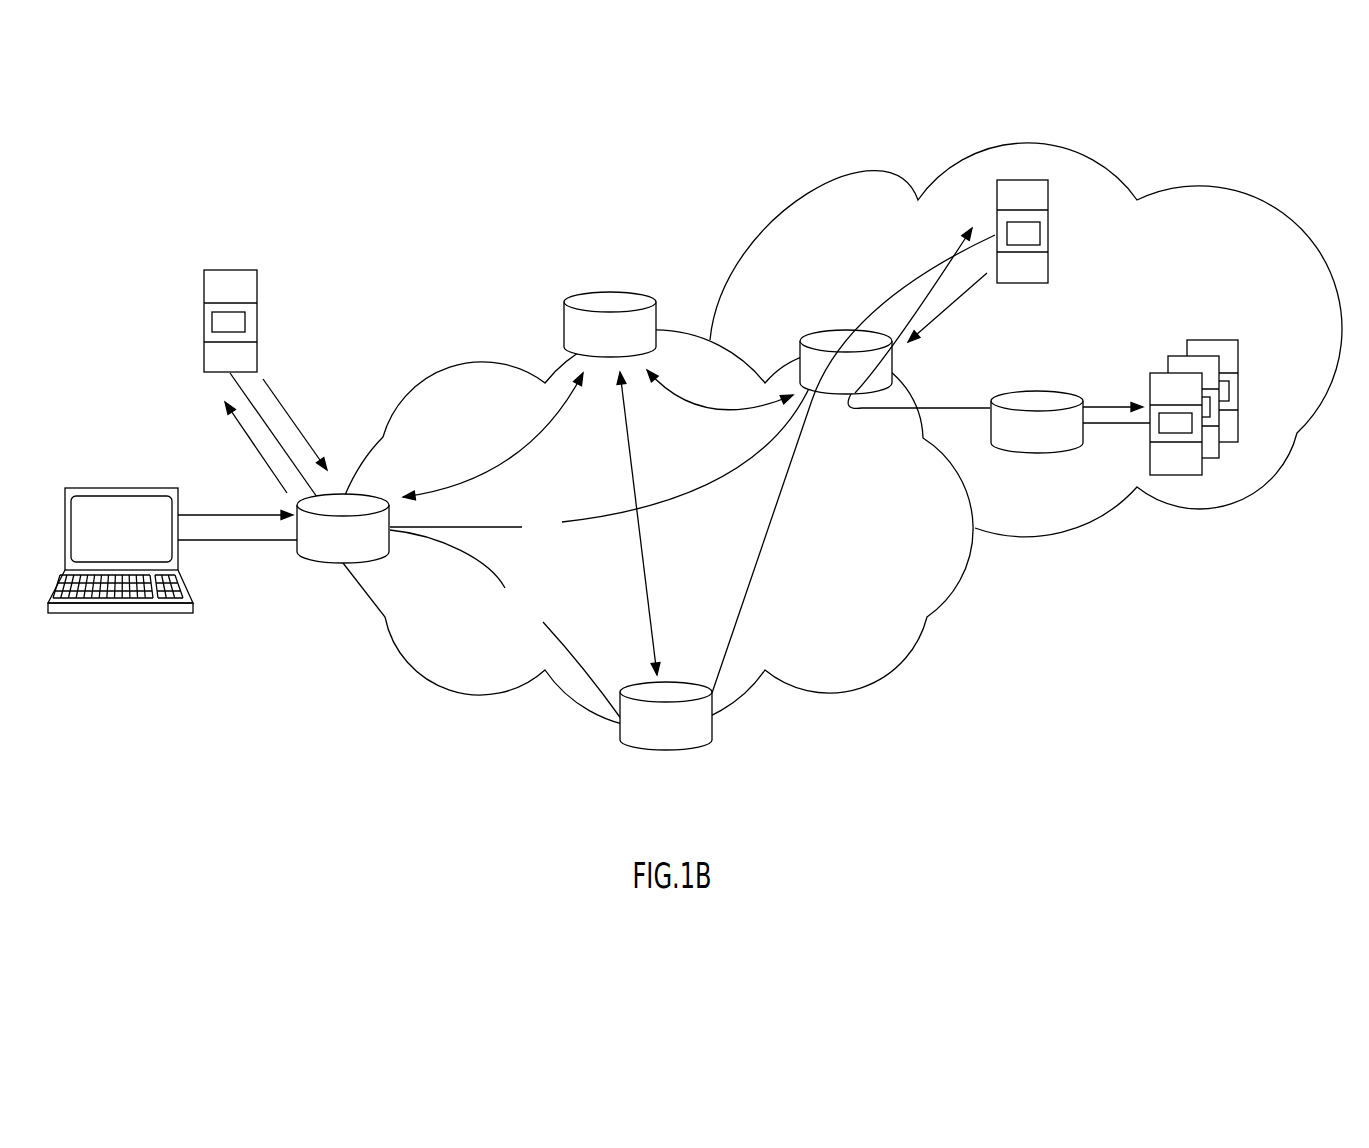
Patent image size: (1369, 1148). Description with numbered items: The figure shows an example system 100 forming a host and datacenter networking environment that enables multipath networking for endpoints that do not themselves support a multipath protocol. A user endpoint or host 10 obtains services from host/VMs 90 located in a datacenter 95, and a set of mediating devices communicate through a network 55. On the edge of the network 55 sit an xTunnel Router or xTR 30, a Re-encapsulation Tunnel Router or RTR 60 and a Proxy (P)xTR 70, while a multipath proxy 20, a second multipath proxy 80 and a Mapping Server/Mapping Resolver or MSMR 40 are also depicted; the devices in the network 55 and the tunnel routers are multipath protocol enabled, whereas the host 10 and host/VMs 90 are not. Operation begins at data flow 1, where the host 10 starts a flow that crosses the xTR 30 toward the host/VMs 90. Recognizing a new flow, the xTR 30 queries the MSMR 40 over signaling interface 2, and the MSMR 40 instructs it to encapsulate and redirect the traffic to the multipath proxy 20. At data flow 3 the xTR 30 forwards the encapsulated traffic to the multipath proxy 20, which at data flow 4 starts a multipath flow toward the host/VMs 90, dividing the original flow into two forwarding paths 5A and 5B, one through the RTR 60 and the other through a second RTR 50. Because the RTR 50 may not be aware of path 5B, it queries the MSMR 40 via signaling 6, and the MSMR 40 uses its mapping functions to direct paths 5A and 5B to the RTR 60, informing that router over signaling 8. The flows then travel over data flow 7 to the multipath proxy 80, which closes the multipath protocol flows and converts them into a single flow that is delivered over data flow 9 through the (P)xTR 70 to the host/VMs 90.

The system 100 is at (476, 151).
The host 10 is at (140, 612).
The multipath proxy 20 is at (257, 312).
The xTunnel Router (xTR) 30 is at (330, 563).
The Mapping Server/Mapping Resolver (MSMR) 40 is at (612, 291).
The Re-encapsulation Tunnel Router (RTR) 50 is at (648, 752).
The network 55 is at (440, 368).
The Re-encapsulation Tunnel Router (RTR) 60 is at (835, 329).
The Proxy xTR ((P)xTR) 70 is at (1050, 456).
The multipath proxy 80 is at (997, 203).
The host/VMs 90 is at (1213, 340).
The datacenter 95 is at (1215, 176).
The data flow 1 is at (235, 515).
The messaging/signaling interface 2 is at (493, 436).
The data flow 3 is at (256, 447).
The data flow 4 is at (295, 424).
The forwarding path 5A is at (601, 460).
The forwarding path 5B is at (506, 625).
The messaging/signaling interface 6 is at (638, 523).
The data flow 7 is at (947, 307).
The messaging/signaling interface 8 is at (720, 395).
The data flow 9 is at (919, 407).